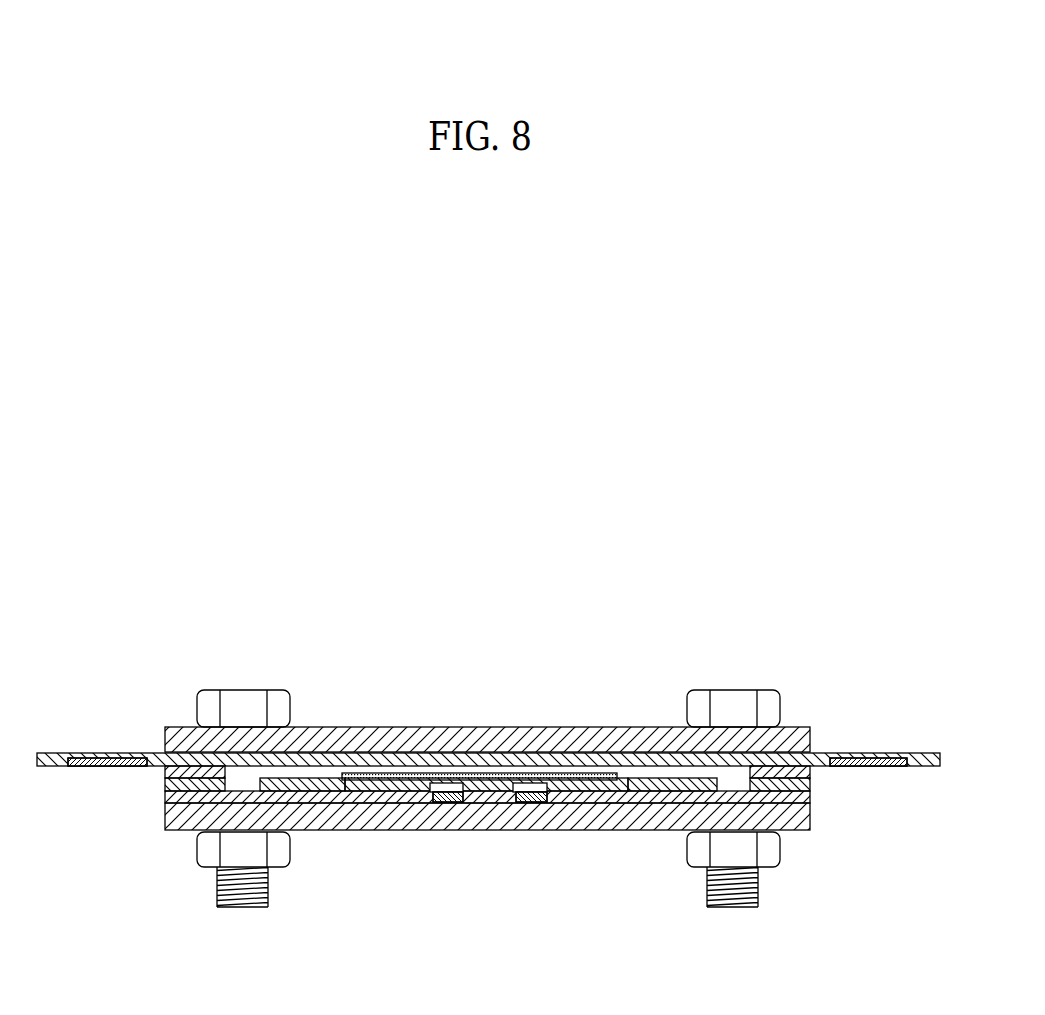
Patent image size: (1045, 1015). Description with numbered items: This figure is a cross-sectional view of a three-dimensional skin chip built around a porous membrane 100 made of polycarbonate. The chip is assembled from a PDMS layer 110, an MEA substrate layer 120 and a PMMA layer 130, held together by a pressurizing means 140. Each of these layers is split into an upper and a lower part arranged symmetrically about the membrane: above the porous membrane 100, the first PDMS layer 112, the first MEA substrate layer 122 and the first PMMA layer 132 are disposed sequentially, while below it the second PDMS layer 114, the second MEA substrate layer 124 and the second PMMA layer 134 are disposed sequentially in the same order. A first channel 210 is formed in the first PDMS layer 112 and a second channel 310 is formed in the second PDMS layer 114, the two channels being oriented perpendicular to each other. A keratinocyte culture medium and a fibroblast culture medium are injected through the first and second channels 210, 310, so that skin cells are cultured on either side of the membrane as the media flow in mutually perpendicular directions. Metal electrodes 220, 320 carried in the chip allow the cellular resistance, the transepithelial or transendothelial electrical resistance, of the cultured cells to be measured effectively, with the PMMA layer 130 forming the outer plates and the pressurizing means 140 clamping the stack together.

The porous membrane 100 is at (367, 780).
The PDMS layer 110 is at (801, 672).
The first PDMS layer 112 is at (770, 772).
The second PDMS layer 114 is at (795, 782).
The MEA substrate layer 120 is at (486, 880).
The first MEA substrate layer 122 is at (52, 760).
The second MEA substrate layer 124 is at (190, 797).
The PMMA layer 130 is at (487, 692).
The first PMMA layer 132 is at (585, 747).
The second PMMA layer 134 is at (660, 813).
The pressurizing means 140 is at (241, 708).
The first channel 210 is at (318, 772).
The metal electrode 220 is at (105, 757).
The second channel 310 is at (448, 787).
The metal electrode 320 is at (525, 795).